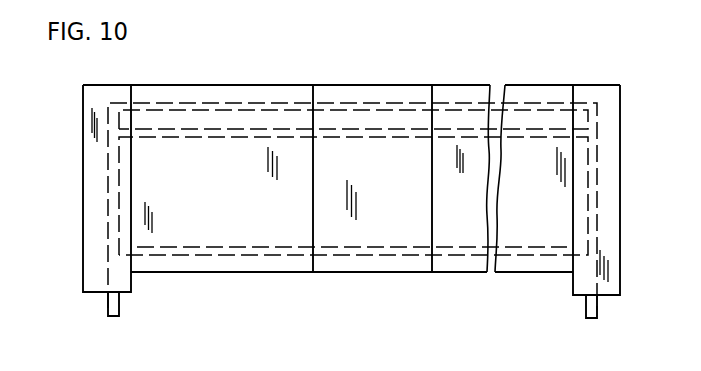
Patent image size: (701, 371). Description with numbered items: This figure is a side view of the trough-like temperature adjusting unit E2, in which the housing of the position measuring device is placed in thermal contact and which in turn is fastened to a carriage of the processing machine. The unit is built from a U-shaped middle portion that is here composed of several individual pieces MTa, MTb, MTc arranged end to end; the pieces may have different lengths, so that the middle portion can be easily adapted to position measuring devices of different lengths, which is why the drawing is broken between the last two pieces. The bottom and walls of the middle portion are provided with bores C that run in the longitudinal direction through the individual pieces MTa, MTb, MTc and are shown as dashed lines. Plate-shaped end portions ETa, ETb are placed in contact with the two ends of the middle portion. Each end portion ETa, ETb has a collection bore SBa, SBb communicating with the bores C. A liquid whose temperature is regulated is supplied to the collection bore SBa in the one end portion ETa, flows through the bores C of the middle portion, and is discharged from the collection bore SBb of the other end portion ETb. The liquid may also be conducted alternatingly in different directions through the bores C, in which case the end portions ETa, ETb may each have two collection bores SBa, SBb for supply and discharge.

The temperature adjusting unit E2 is at (72, 118).
The end portion ETa is at (93, 269).
The end portion ETb is at (582, 279).
The collection bore SBa is at (113, 303).
The collection bore SBb is at (598, 308).
The individual piece MTa is at (192, 93).
The individual piece MTb is at (370, 95).
The individual piece MTc is at (463, 97).
The bores C is at (177, 135).